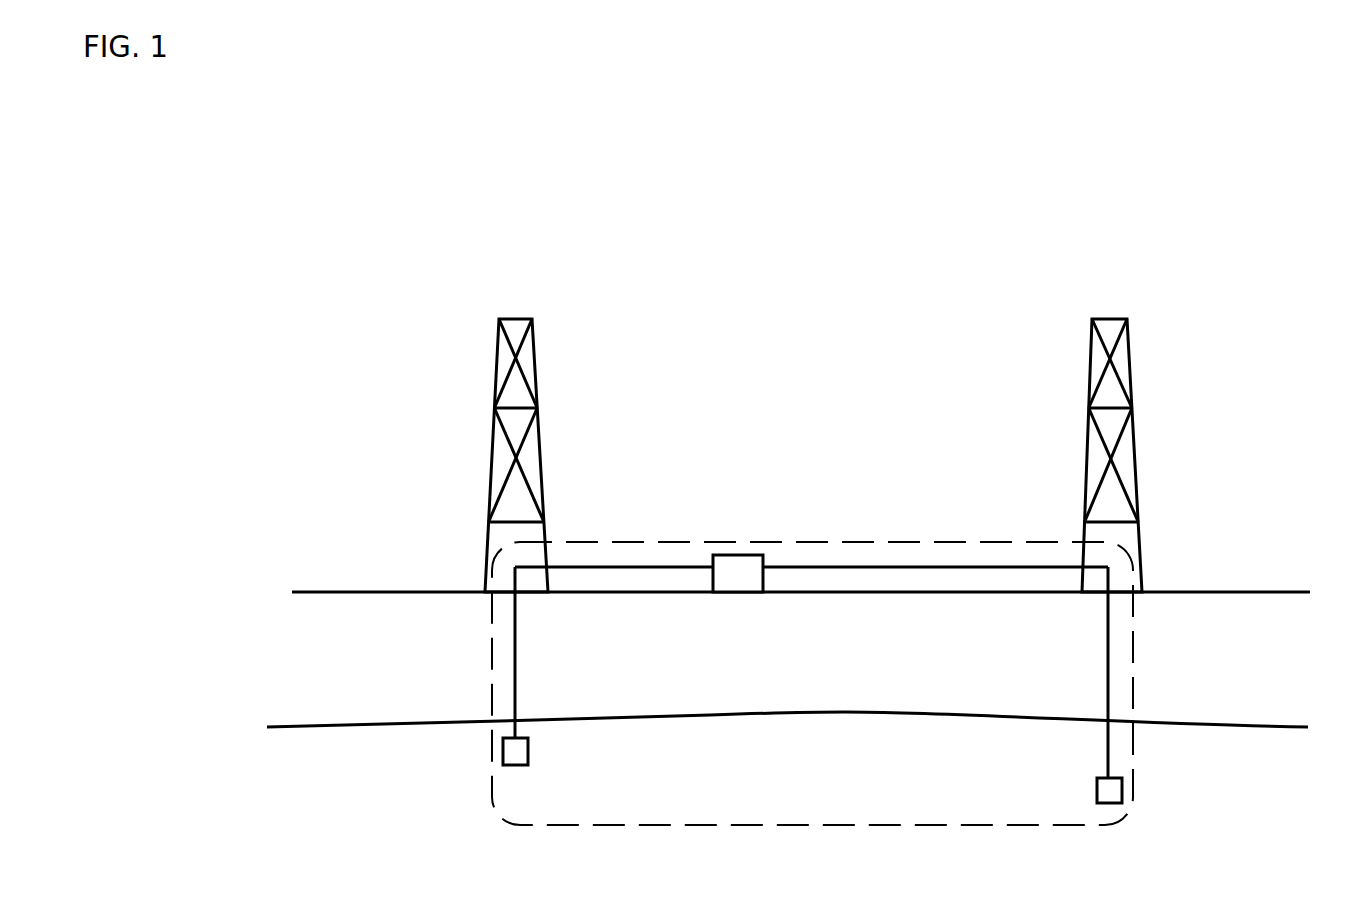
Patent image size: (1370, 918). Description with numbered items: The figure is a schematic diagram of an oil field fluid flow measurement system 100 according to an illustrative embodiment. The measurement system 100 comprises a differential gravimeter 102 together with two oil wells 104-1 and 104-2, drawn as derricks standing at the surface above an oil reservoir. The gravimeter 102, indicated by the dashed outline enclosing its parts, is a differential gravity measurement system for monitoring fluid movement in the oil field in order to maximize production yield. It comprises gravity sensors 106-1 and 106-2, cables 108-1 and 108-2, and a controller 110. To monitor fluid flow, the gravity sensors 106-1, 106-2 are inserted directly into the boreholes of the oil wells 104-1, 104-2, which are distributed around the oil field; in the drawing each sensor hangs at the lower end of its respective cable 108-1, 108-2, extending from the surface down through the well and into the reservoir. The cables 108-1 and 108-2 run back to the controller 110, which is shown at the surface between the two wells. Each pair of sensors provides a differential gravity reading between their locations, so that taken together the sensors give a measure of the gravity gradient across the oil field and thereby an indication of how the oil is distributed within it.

The measurement system 100 is at (530, 234).
The differential gravimeter 102 is at (862, 530).
The oil well 104-1 is at (435, 458).
The oil well 104-2 is at (1207, 458).
The gravity sensor 106-1 is at (528, 753).
The gravity sensor 106-2 is at (1097, 788).
The cable 108-1 is at (517, 690).
The cable 108-2 is at (1108, 688).
The controller 110 is at (738, 578).